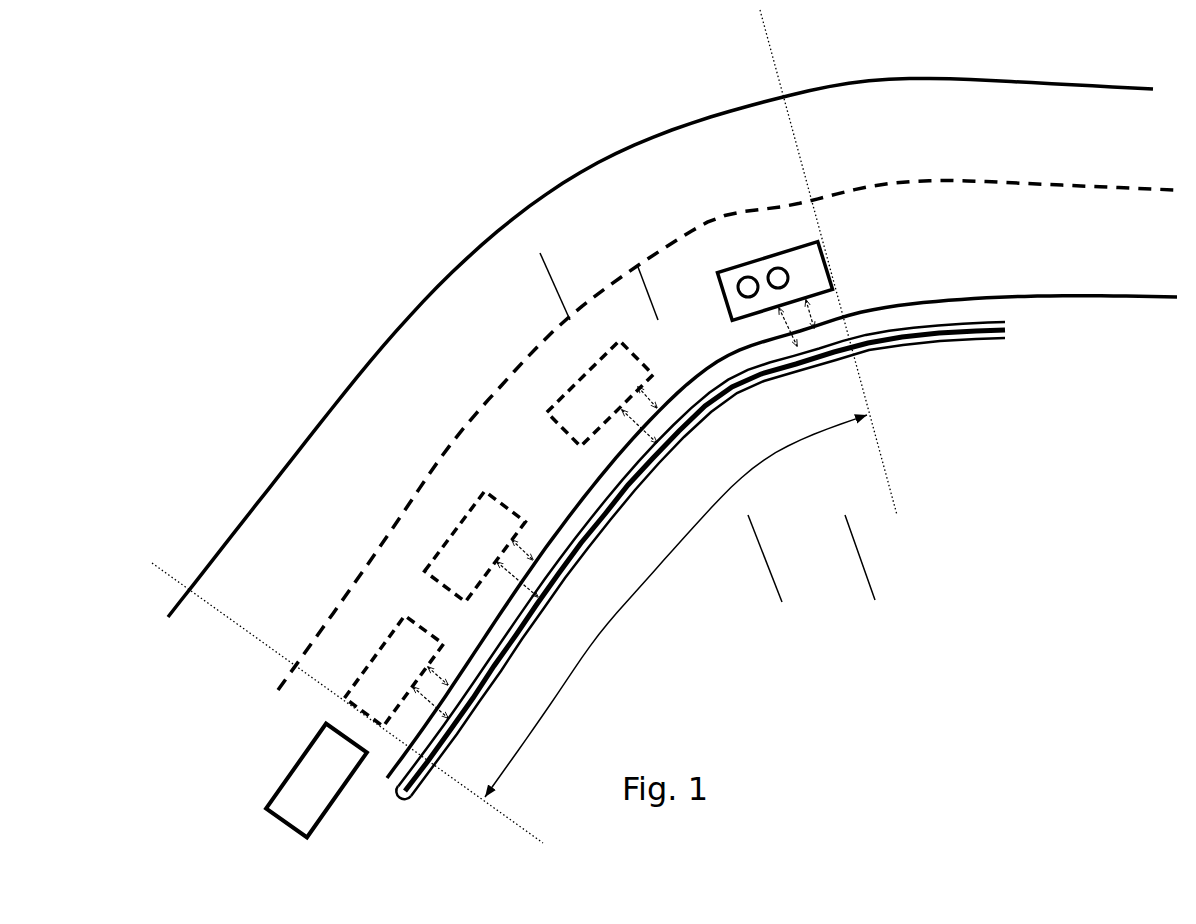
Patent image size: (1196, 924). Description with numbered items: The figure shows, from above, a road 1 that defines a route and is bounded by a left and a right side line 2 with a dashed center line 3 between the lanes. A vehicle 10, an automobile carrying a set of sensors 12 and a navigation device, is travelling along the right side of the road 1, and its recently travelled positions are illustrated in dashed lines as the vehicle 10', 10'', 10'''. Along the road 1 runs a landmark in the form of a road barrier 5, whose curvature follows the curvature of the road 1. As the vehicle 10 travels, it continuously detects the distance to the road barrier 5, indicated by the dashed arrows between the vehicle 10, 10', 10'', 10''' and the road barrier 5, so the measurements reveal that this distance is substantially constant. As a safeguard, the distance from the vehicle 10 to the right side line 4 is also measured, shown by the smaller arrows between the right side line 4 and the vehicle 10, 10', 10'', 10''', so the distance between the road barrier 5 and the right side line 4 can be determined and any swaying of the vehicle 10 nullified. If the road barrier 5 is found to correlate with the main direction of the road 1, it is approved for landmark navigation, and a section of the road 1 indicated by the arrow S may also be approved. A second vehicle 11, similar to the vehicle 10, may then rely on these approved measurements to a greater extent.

The road 1 is at (435, 352).
The side line 2 is at (485, 242).
The dashed center line 3 is at (600, 292).
The right side line 4 is at (985, 297).
The road barrier 5 is at (753, 387).
The vehicle 10 is at (738, 258).
The vehicle at earlier position 10' is at (559, 382).
The vehicle at earlier position 10'' is at (436, 535).
The vehicle at earlier position 10''' is at (353, 662).
The second vehicle 11 is at (290, 773).
The sensors 12 is at (750, 277).
The section of the road S is at (628, 598).